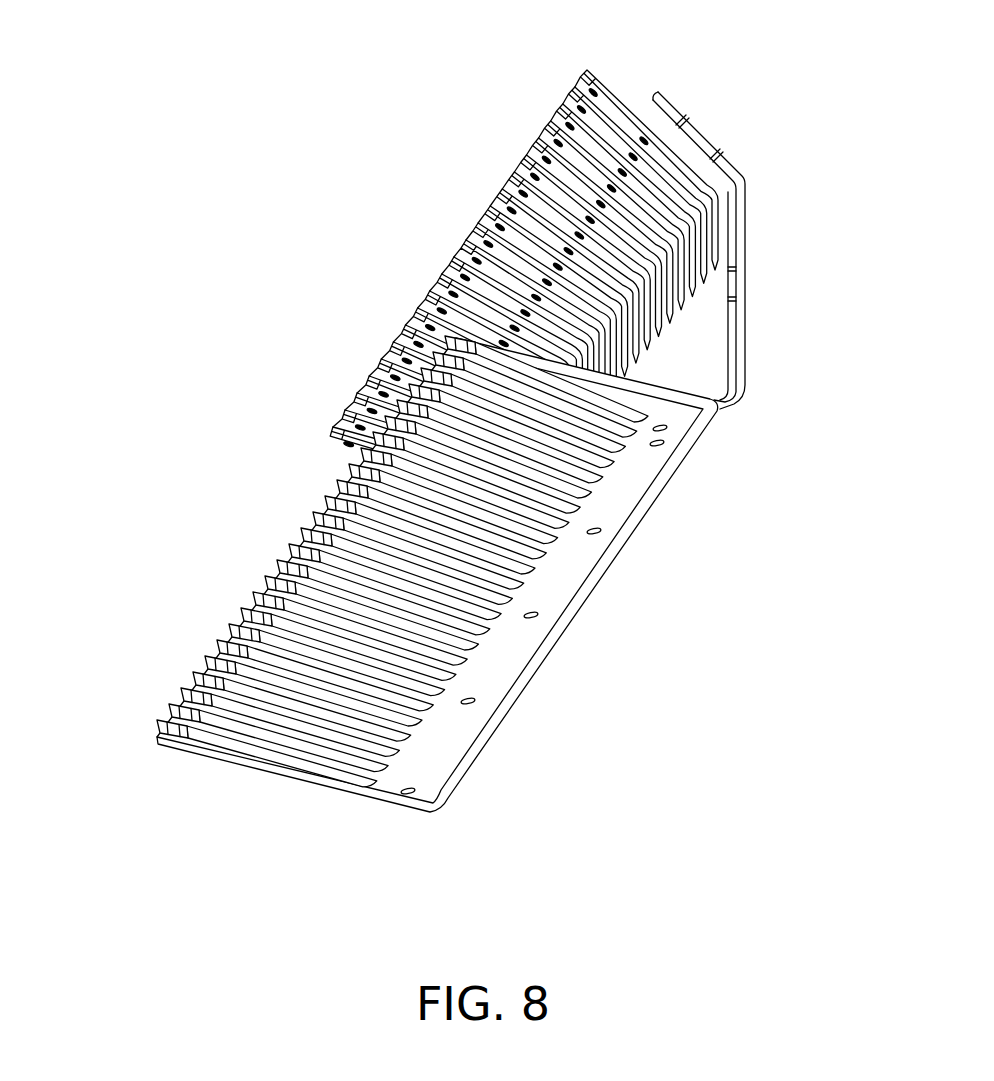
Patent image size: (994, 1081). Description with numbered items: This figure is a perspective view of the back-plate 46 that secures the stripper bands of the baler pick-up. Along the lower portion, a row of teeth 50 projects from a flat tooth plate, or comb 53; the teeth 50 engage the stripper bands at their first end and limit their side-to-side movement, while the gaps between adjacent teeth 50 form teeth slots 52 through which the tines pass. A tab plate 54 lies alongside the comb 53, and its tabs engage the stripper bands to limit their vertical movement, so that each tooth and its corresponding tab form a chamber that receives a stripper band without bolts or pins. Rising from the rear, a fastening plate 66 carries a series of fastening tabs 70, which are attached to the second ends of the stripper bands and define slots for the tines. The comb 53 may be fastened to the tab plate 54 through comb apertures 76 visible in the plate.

The back-plate 46 is at (443, 434).
The teeth 50 is at (395, 561).
The teeth slots 52 is at (517, 490).
The comb 53 is at (396, 595).
The tab plate 54 is at (648, 391).
The fastening plate 66 is at (524, 281).
The fastening tabs 70 is at (551, 124).
The comb apertures 76 is at (472, 706).